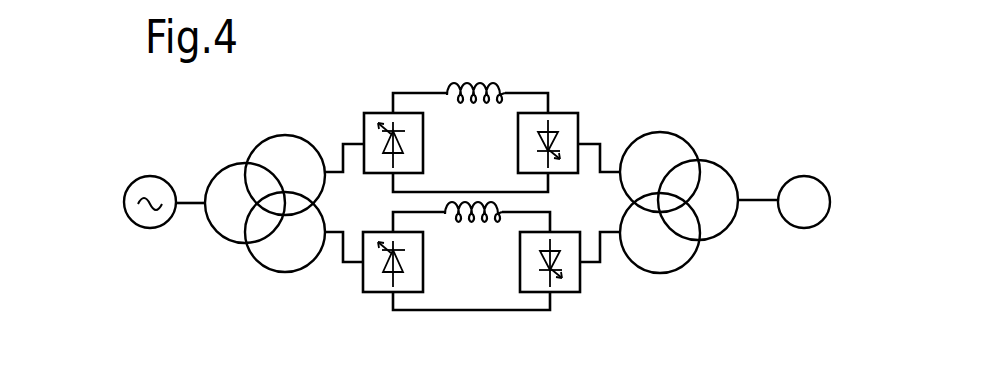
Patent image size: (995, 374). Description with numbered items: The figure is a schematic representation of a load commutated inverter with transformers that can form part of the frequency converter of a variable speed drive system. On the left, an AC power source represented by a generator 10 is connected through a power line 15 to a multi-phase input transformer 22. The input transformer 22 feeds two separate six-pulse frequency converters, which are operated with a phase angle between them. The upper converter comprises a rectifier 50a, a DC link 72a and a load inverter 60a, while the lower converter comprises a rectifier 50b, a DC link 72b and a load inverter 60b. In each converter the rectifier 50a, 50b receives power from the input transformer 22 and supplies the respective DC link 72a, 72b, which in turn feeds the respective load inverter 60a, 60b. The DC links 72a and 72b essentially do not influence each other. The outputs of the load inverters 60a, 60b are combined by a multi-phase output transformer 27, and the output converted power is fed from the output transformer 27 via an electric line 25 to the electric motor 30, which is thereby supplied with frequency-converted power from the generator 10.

The generator 10 is at (147, 180).
The power line 15 is at (192, 198).
The multi-phase input transformer 22 is at (248, 273).
The electric line 25 is at (757, 198).
The multi-phase output transformer 27 is at (683, 275).
The electric motor 30 is at (805, 177).
The rectifier 50a is at (370, 117).
The rectifier 50b is at (375, 278).
The load inverter 60a is at (565, 122).
The load inverter 60b is at (575, 293).
The DC link 72a is at (468, 80).
The DC link 72b is at (475, 223).